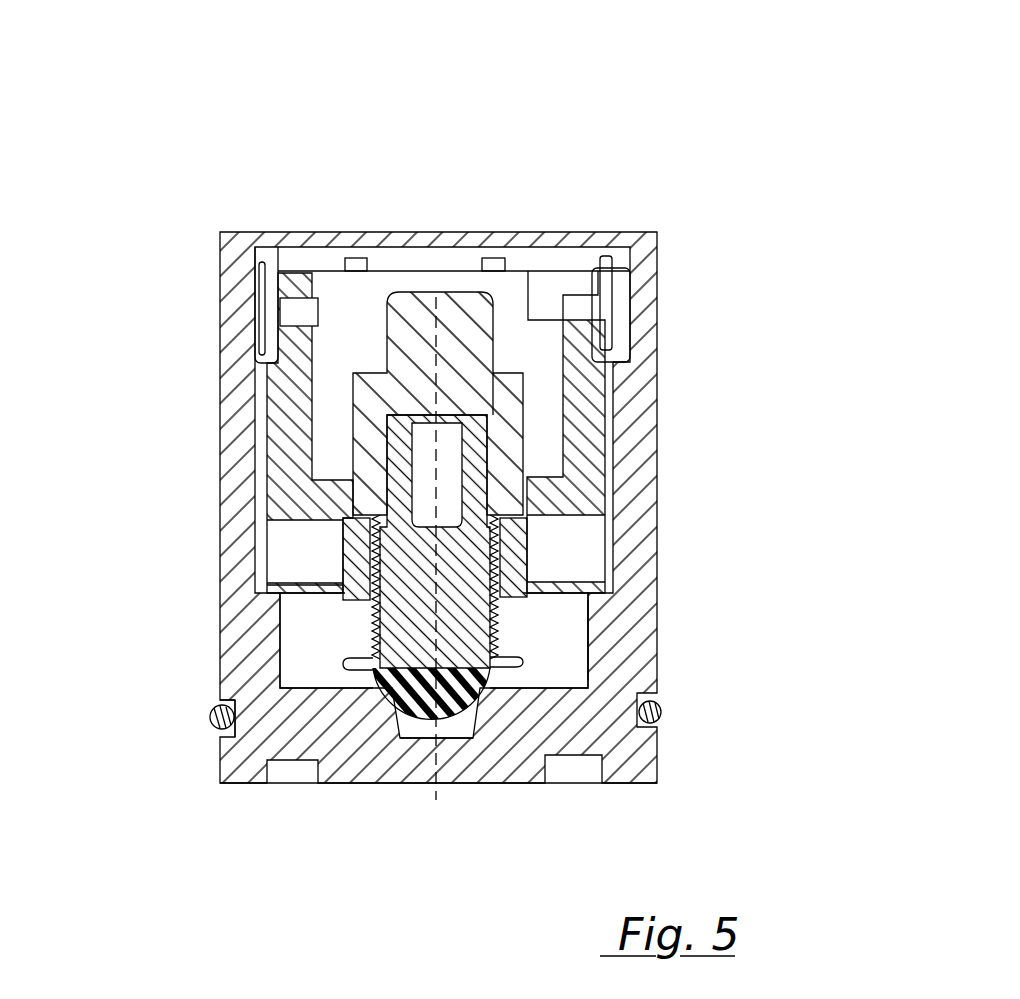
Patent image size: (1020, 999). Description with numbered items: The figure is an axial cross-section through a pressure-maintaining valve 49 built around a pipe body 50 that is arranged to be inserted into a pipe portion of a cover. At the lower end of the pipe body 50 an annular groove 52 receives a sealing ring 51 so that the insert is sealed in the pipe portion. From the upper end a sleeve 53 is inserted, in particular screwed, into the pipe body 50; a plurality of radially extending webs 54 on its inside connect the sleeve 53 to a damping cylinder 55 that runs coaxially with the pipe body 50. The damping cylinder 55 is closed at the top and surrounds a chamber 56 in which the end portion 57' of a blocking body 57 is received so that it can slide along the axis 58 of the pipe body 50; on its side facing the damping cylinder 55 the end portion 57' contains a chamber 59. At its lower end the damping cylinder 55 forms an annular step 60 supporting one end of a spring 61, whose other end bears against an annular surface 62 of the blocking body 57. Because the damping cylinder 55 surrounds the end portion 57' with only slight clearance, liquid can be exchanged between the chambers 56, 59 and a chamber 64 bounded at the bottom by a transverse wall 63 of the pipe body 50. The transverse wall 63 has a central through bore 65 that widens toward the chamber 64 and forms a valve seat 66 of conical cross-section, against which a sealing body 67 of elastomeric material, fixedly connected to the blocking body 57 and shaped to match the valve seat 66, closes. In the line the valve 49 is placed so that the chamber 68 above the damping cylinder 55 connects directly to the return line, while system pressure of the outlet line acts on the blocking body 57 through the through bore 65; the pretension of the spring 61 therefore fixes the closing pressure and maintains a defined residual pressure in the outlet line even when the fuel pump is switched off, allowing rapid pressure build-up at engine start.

The pressure-maintaining valve 49 is at (120, 201).
The pipe body 50 is at (237, 428).
The sealing ring 51 is at (213, 732).
The annular groove 52 is at (154, 682).
The sleeve 53 is at (290, 400).
The webs 54 is at (540, 492).
The damping cylinder 55 is at (512, 404).
The chamber 56 is at (437, 423).
The blocking body 57 is at (400, 576).
The end portion 57' is at (616, 421).
The axis 58 is at (454, 241).
The chamber 59 is at (428, 472).
The annular step 60 is at (370, 511).
The spring 61 is at (207, 662).
The annular surface 62 is at (543, 630).
The transverse wall 63 is at (560, 732).
The chamber 64 is at (560, 650).
The through bore 65 is at (405, 745).
The valve seat 66 is at (475, 708).
The sealing body 67 is at (446, 728).
The chamber 68 is at (512, 292).